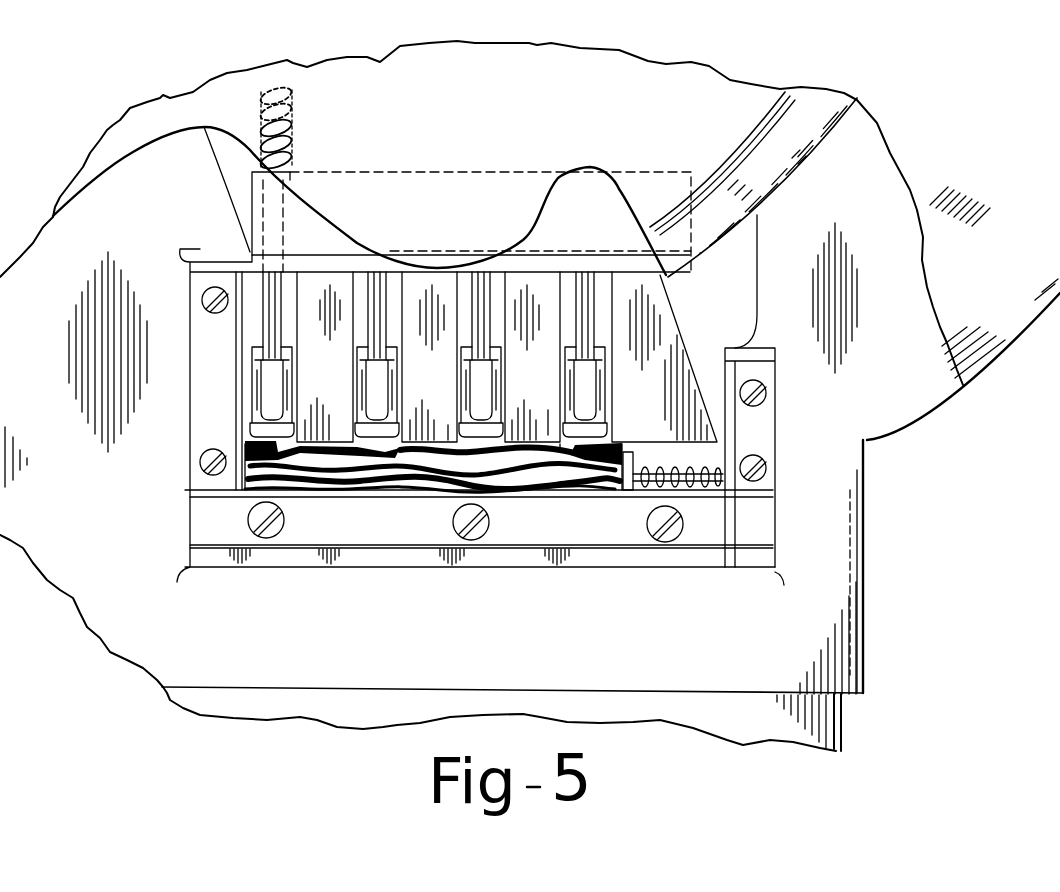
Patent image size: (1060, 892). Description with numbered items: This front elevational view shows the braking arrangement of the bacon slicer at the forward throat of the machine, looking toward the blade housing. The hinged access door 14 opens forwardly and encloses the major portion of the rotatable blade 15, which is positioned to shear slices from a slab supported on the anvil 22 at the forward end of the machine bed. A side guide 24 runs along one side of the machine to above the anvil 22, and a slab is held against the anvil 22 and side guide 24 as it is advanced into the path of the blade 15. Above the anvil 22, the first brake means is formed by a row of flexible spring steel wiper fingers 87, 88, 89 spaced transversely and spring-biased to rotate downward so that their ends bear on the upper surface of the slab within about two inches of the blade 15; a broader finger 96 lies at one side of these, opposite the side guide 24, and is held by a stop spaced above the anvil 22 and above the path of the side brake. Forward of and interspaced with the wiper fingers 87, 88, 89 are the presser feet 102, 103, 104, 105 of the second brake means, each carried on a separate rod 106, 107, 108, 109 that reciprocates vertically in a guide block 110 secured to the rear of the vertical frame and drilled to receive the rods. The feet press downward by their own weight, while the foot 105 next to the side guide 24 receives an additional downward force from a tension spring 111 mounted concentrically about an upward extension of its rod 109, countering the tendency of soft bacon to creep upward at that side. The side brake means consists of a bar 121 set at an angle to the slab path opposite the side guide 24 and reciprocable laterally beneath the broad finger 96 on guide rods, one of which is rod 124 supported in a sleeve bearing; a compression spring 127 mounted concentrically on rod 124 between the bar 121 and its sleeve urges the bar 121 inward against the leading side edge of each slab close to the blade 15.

The hinged access door 14 is at (987, 370).
The rotatable blade 15 is at (817, 157).
The anvil 22 is at (320, 520).
The side guide 24 is at (190, 481).
The wiper finger 87 is at (554, 418).
The wiper finger 88 is at (449, 411).
The wiper finger 89 is at (341, 406).
The broad finger 96 is at (644, 413).
The presser foot 102 is at (588, 450).
The presser foot 103 is at (490, 443).
The presser foot 104 is at (380, 440).
The presser foot 105 is at (252, 432).
The rod 106 is at (578, 294).
The rod 107 is at (474, 287).
The rod 108 is at (368, 287).
The rod 109 is at (258, 327).
The guide block 110 is at (404, 170).
The tension spring 111 is at (292, 121).
The bar 121 is at (623, 455).
The guide rod 124 is at (713, 493).
The compression spring 127 is at (690, 488).